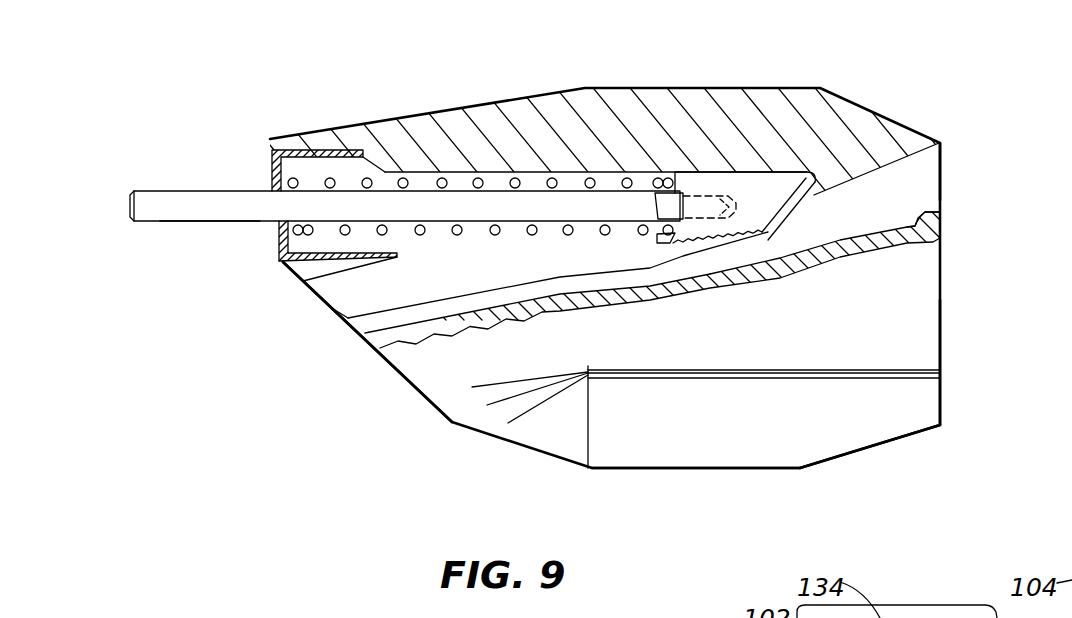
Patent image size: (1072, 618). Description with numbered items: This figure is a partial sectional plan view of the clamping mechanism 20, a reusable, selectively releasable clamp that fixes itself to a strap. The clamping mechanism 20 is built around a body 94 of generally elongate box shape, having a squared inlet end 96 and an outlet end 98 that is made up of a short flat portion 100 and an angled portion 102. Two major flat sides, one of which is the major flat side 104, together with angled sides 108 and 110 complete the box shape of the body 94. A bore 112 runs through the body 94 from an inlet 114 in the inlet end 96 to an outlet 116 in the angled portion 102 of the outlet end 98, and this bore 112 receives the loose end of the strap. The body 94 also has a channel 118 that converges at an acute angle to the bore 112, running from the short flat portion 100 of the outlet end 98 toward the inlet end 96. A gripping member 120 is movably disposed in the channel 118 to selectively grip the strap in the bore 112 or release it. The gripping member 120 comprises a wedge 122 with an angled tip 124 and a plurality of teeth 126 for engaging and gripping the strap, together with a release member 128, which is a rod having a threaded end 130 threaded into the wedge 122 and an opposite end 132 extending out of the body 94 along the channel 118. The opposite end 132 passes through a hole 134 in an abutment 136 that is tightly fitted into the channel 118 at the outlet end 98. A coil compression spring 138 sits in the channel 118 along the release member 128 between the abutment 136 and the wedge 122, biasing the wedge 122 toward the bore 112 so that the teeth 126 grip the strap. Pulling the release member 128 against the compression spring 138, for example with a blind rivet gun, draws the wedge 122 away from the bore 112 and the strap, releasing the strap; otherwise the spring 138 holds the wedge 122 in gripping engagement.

The clamping mechanism 20 is at (593, 66).
The body 94 is at (845, 432).
The inlet end 96 is at (943, 357).
The outlet end 98 is at (270, 139).
The short flat portion 100 is at (279, 258).
The angled portion 102 is at (398, 368).
The major flat side 104 is at (706, 387).
The angled side 108 is at (537, 92).
The angled side 110 is at (710, 468).
The bore 112 is at (917, 222).
The inlet 114 is at (942, 170).
The outlet 116 is at (340, 312).
The channel 118 is at (458, 183).
The gripping member 120 is at (700, 158).
The wedge 122 is at (765, 182).
The angled tip 124 is at (800, 199).
The teeth 126 is at (710, 240).
The release member 128 is at (198, 240).
The threaded end 130 is at (673, 242).
The opposite end 132 is at (131, 222).
The hole 134 is at (274, 185).
The abutment 136 is at (335, 262).
The coil compression spring 138 is at (495, 236).